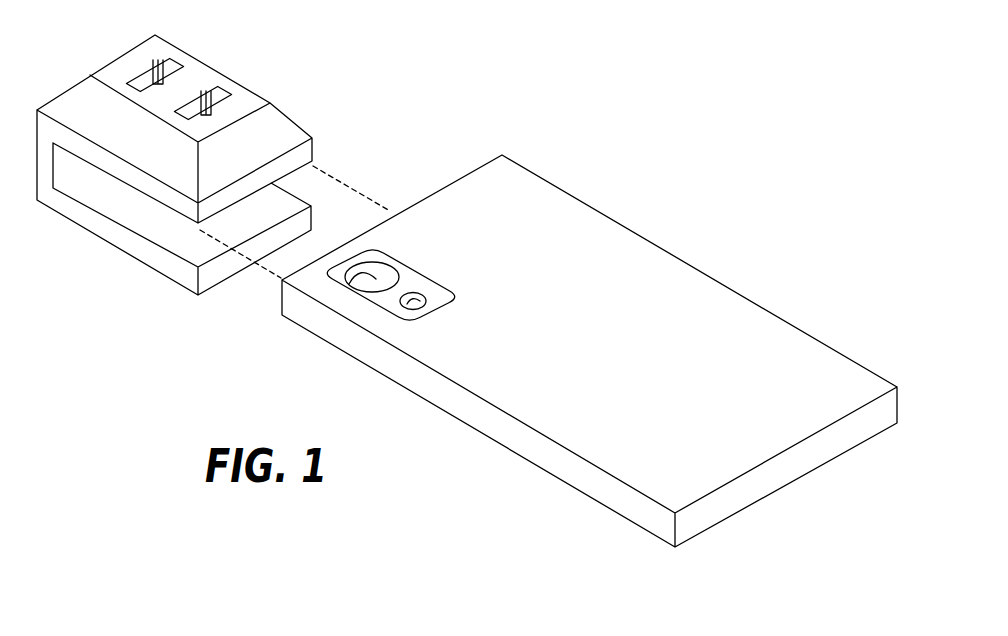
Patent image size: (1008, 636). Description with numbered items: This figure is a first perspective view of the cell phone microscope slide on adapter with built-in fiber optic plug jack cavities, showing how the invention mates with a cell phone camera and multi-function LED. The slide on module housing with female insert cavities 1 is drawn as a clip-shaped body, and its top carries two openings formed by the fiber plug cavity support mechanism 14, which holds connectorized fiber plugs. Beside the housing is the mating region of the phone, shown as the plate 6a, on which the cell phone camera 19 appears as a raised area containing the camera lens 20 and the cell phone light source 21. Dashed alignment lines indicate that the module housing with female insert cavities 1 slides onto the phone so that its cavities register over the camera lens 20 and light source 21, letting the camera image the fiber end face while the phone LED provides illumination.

The slide on module housing with female insert cavities 1 is at (142, 248).
The fiber plug cavity support mechanism 14 is at (207, 90).
The plate 6a is at (583, 468).
The cell phone camera 19 is at (405, 258).
The camera lens 20 is at (347, 281).
The cell phone light source 21 is at (392, 303).